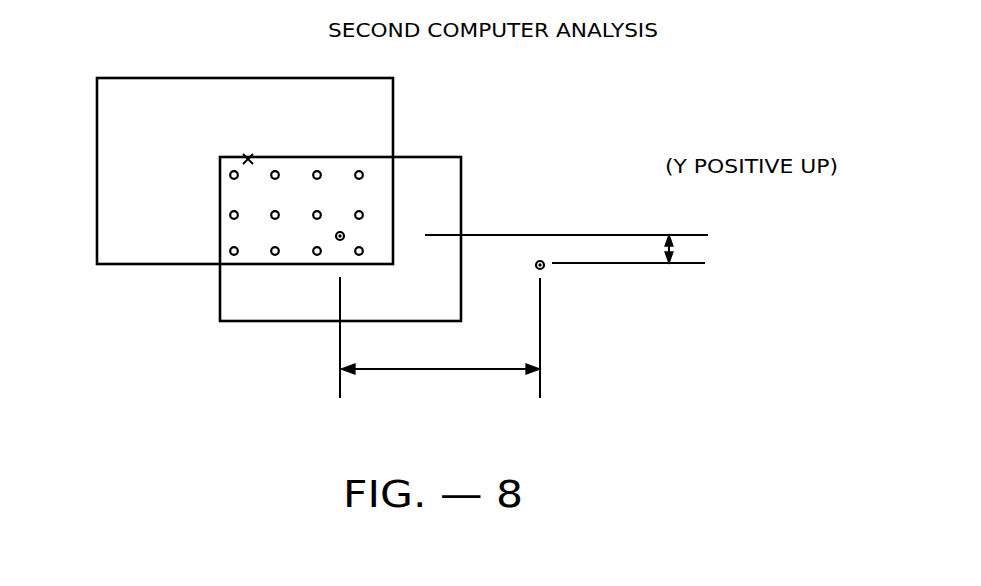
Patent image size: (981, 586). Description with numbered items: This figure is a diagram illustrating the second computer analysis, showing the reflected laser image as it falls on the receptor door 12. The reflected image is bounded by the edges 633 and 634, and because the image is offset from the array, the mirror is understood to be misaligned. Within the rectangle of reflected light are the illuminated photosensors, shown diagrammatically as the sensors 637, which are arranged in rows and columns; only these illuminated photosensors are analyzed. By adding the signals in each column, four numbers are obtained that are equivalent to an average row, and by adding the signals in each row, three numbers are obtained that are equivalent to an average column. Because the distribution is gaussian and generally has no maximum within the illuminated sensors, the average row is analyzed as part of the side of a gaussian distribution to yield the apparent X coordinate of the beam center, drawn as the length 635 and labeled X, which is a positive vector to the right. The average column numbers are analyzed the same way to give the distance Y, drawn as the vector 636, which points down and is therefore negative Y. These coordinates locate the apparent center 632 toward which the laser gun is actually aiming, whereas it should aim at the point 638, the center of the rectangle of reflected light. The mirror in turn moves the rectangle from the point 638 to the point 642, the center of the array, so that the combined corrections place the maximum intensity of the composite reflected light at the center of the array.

The receptor door 12 is at (97, 141).
The edge of reflected image 633 is at (220, 228).
The edge of reflected image 634 is at (367, 155).
The sensors 637 is at (362, 172).
The center of the rectangle of reflected light 638 is at (352, 230).
The apparent center of the beam 632 is at (543, 269).
The distance Y 636 is at (604, 249).
The length X 635 is at (441, 359).
The center of the array 642 is at (248, 158).